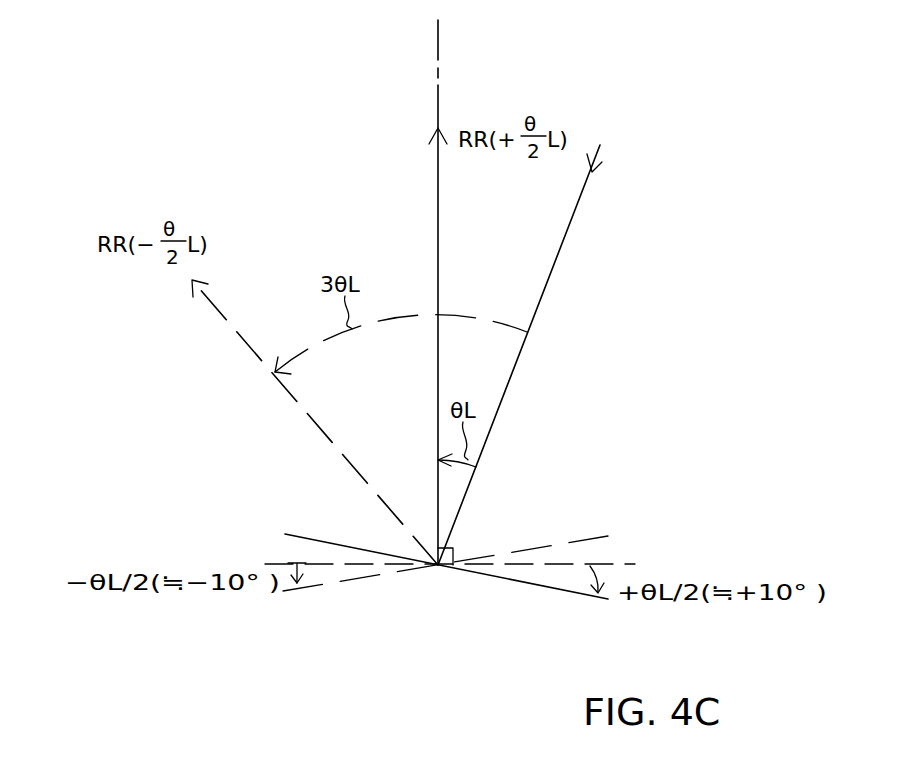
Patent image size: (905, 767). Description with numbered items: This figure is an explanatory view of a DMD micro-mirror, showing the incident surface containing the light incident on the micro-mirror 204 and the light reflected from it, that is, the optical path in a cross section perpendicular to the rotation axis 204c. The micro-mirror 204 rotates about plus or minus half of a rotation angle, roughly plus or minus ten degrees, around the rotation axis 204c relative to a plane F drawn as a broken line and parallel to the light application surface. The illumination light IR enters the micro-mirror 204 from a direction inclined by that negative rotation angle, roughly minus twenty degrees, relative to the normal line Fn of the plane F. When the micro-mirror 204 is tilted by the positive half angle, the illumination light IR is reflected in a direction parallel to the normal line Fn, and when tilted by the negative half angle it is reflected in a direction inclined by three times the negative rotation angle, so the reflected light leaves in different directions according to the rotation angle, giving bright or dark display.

The micro-mirror 204 is at (441, 584).
The rotation axis 204c is at (437, 567).
The normal line Fn is at (440, 45).
The illumination light IR is at (586, 200).
The plane F is at (622, 568).